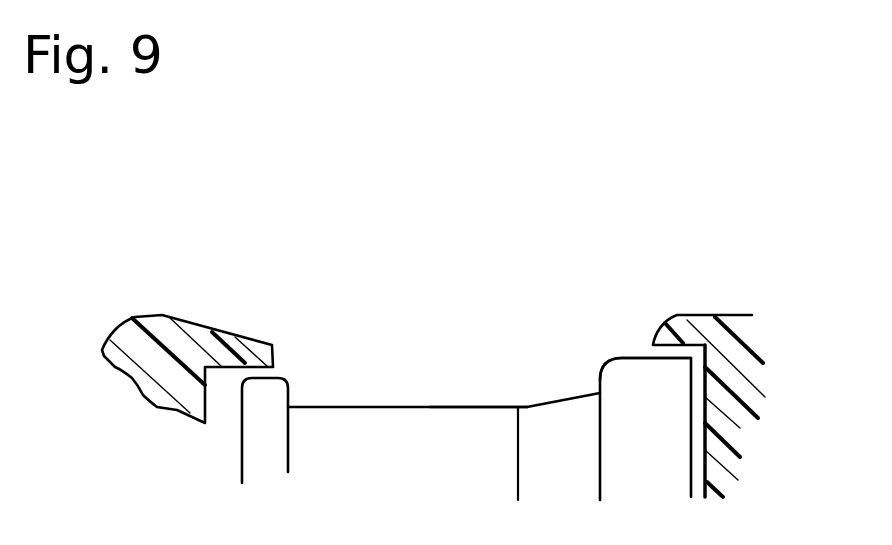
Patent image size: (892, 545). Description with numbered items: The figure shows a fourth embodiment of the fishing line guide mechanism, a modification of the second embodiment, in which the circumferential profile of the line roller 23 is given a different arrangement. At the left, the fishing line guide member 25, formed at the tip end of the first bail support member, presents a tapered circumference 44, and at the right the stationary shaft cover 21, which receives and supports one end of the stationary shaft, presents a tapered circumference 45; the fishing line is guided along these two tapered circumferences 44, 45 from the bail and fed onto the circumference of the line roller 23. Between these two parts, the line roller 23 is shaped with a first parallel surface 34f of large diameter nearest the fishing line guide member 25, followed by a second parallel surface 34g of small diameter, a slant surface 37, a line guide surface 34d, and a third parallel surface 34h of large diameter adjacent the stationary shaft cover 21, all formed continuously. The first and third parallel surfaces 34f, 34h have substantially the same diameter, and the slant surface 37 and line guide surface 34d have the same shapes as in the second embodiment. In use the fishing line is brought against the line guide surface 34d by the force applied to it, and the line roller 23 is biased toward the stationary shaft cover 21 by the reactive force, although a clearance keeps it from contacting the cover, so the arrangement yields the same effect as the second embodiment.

The fishing line guide member 25 is at (152, 313).
The tapered circumference 44 is at (207, 330).
The first parallel surface 34f is at (284, 377).
The line roller 23 is at (397, 406).
The second parallel surface 34g is at (477, 405).
The slant surface 37 is at (555, 400).
The line guide surface 34d is at (603, 373).
The third parallel surface 34h is at (646, 357).
The tapered circumference 45 is at (730, 316).
The stationary shaft cover 21 is at (748, 438).